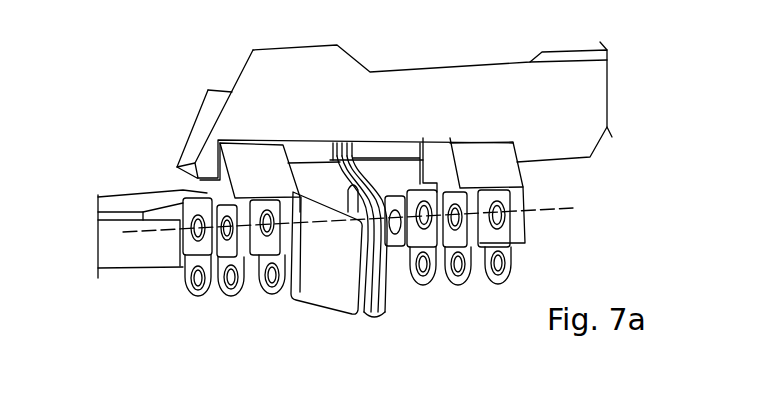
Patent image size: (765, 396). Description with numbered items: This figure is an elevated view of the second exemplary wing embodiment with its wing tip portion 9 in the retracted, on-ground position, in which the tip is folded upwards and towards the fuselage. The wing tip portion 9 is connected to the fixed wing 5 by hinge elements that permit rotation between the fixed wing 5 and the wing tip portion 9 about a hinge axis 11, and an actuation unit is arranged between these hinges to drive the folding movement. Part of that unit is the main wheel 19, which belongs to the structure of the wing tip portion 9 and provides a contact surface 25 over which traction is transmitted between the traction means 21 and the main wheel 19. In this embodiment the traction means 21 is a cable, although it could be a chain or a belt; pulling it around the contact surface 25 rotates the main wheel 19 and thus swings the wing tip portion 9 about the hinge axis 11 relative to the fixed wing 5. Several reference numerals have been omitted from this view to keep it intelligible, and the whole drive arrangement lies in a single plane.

The fixed wing 5 is at (112, 246).
The wing tip portion 9 is at (587, 107).
The hinge axis 11 is at (562, 210).
The main wheel 19 is at (340, 190).
The traction means 21 is at (380, 262).
The contact surface 25 is at (367, 177).